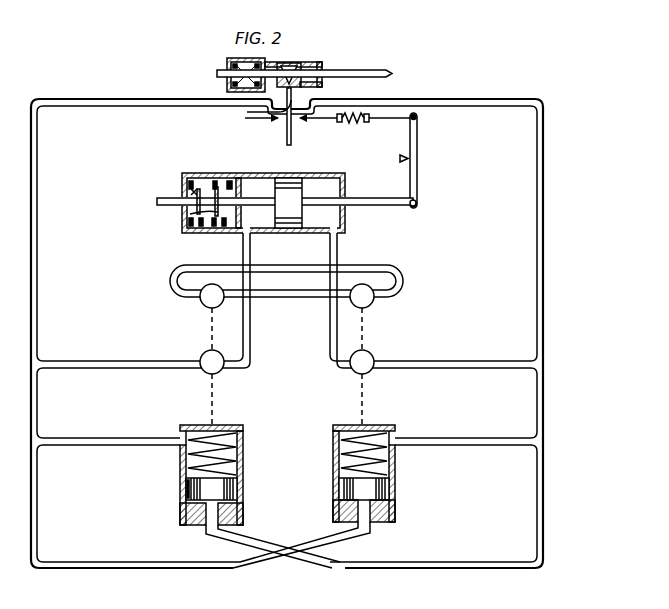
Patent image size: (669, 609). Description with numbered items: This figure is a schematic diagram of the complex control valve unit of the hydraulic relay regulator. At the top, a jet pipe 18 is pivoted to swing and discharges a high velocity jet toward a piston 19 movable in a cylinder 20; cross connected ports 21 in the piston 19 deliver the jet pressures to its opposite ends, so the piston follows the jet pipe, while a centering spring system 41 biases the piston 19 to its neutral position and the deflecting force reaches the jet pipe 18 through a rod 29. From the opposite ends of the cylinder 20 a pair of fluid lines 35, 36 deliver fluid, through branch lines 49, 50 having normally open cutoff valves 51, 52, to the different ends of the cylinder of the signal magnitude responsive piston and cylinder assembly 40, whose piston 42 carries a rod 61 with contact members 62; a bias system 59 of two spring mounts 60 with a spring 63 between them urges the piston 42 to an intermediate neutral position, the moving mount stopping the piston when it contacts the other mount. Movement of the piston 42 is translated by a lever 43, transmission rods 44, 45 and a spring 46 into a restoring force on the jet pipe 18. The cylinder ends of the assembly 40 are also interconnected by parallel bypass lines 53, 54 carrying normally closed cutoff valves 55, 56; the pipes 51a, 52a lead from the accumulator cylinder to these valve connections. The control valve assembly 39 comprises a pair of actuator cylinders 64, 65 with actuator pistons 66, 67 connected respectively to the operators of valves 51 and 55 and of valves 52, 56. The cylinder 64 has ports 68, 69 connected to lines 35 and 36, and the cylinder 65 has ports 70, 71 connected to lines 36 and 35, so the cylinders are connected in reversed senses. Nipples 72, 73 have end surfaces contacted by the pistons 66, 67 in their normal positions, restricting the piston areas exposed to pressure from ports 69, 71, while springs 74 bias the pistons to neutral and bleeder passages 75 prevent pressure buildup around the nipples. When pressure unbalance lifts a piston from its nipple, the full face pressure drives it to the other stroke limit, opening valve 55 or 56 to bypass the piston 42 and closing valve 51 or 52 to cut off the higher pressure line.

The jet pipe 18 is at (292, 136).
The piston 19 is at (322, 79).
The cylinder 20 is at (270, 60).
The cross connected ports 21 is at (259, 111).
The rod 29 is at (259, 119).
The fluid line 35 is at (112, 100).
The fluid line 36 is at (490, 100).
The control valve assembly 39 is at (492, 481).
The piston and cylinder assembly 40 is at (178, 230).
The centering spring system 41 is at (217, 84).
The piston 42 is at (290, 190).
The lever 43 is at (418, 148).
The transmission rod 44 is at (398, 119).
The transmission rod 45 is at (319, 120).
The spring 46 is at (346, 122).
The branch line 49 is at (100, 361).
The branch line 50 is at (510, 361).
The normally open cutoff valve 51 is at (203, 354).
The pipe 51a is at (243, 242).
The normally open cutoff valve 52 is at (373, 355).
The pipe 52a is at (337, 241).
The bypass line 53 is at (180, 266).
The bypass line 54 is at (401, 268).
The normally closed cutoff valve 55 is at (201, 300).
The normally closed cutoff valve 56 is at (374, 298).
The bias system 59 is at (198, 184).
The spring mounts 60 is at (190, 192).
The rod 61 is at (258, 207).
The contact members 62 is at (192, 216).
The spring 63 is at (224, 184).
The actuator cylinder 64 is at (181, 468).
The actuator cylinder 65 is at (395, 466).
The actuator piston 66 is at (188, 488).
The actuator piston 67 is at (392, 492).
The port 68 is at (181, 437).
The port 69 is at (210, 531).
The port 70 is at (395, 438).
The port 71 is at (370, 529).
The nipple 72 is at (188, 510).
The nipple 73 is at (393, 515).
The spring 74 is at (226, 433).
The bleeder passage 75 is at (189, 493).